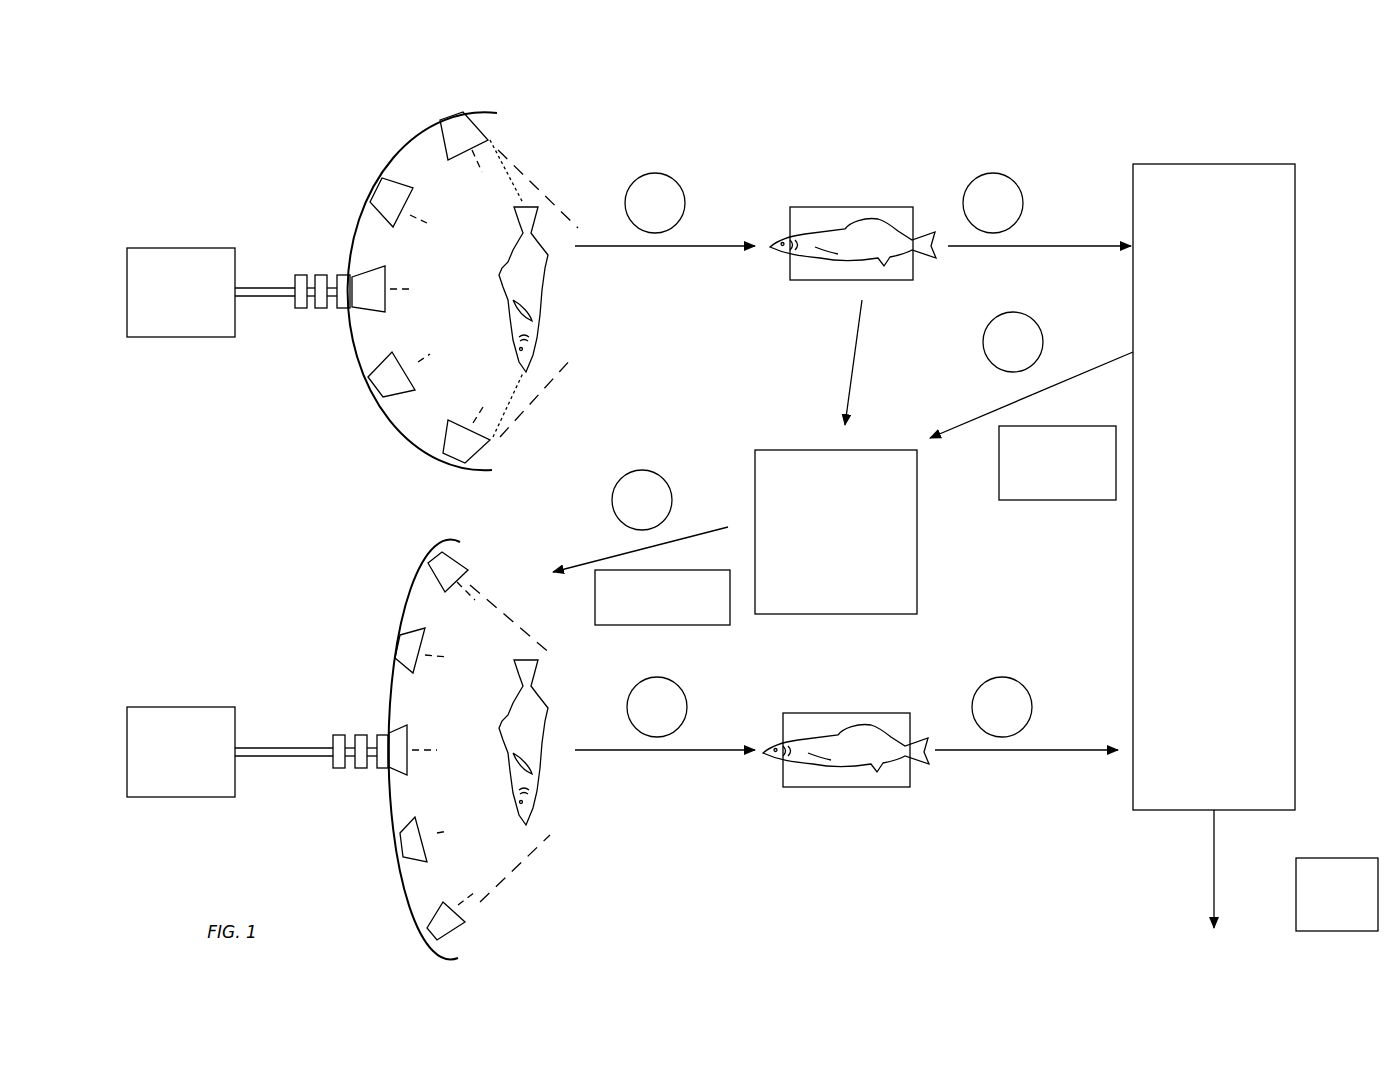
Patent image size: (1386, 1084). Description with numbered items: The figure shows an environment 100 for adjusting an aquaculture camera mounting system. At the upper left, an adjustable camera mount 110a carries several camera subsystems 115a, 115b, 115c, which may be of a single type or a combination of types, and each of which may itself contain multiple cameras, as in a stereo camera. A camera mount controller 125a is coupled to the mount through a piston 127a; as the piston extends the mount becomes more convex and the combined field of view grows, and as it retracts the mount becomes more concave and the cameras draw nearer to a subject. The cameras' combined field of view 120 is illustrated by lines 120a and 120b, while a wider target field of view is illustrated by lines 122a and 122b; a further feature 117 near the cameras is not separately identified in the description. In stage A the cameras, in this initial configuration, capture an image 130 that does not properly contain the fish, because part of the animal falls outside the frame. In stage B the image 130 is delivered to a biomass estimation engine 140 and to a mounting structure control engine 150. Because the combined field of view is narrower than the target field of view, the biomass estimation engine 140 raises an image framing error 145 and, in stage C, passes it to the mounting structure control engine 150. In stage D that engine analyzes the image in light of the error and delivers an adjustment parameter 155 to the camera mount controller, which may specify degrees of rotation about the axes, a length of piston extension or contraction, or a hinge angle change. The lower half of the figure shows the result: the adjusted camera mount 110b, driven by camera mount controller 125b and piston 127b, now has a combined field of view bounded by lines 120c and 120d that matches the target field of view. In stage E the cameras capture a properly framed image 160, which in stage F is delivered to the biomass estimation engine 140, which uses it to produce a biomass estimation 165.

The biomass estimation system 100 is at (1117, 100).
The adjustable camera mount 110a is at (502, 108).
The adjustable camera mount 110b is at (462, 544).
The camera subsystem 115a is at (446, 116).
The camera subsystem 115b is at (372, 178).
The camera subsystem 115c is at (447, 466).
The camera field of view axis 117 is at (437, 234).
The combined field of view 120 is at (548, 335).
The combined field of view line 120a is at (506, 190).
The combined field of view line 120b is at (510, 392).
The combined field of view line 120c is at (512, 629).
The combined field of view line 120d is at (529, 881).
The target field of view line 122a is at (527, 172).
The target field of view line 122b is at (563, 374).
The camera mount controller 125a is at (180, 246).
The camera mount controller 125b is at (180, 702).
The piston 127a is at (298, 311).
The piston 127b is at (336, 770).
The image 130 is at (832, 206).
The biomass estimation engine 140 is at (1214, 487).
The image framing error 145 is at (1036, 503).
The mounting structure control engine 150 is at (836, 532).
The adjustment parameter 155 is at (733, 627).
The image 160 is at (868, 789).
The biomass estimation 165 is at (1331, 854).